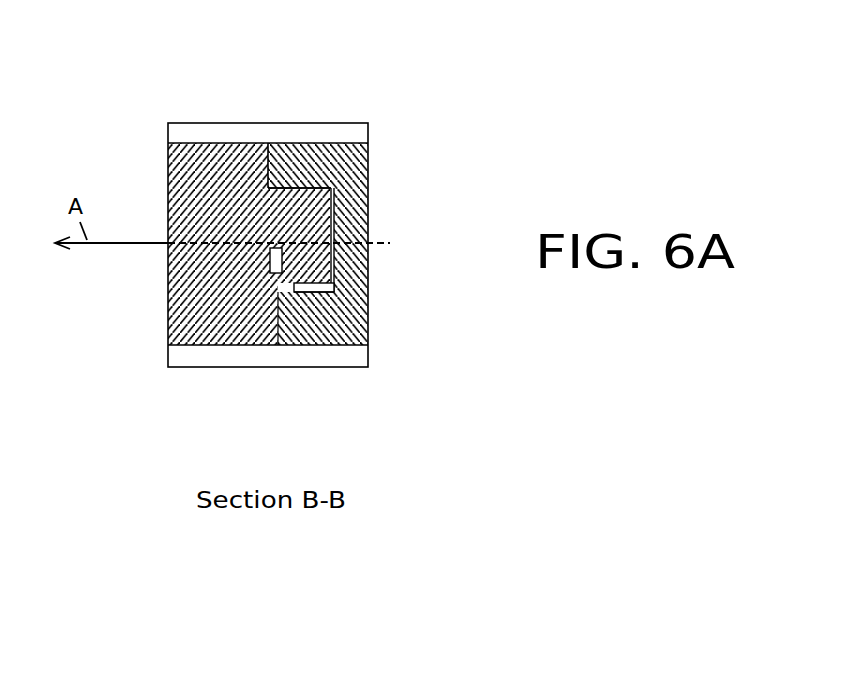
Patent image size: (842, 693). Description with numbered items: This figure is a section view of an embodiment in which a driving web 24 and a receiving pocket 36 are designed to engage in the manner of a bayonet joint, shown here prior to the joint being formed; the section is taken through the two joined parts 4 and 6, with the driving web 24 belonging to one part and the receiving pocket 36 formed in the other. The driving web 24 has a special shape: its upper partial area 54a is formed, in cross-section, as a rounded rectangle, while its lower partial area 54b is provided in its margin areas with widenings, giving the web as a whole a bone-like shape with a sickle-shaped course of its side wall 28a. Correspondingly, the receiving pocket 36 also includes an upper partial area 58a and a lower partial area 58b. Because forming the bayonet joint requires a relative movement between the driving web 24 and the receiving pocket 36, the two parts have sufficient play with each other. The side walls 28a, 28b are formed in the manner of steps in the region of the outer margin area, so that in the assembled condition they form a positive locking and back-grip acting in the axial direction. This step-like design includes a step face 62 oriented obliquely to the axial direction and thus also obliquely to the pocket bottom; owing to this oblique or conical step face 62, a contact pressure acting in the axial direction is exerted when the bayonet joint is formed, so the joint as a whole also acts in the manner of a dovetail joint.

The second body portion 4 is at (348, 350).
The first body portion 6 is at (211, 328).
The driving web 24 is at (289, 200).
The side wall 28a is at (280, 188).
The side wall 28b is at (283, 188).
The receiving pocket 36 is at (334, 288).
The upper partial area 54a is at (276, 272).
The lower partial area 54b is at (313, 292).
The upper partial area 58a is at (282, 292).
The lower partial area 58b is at (350, 324).
The step face 62 is at (312, 275).